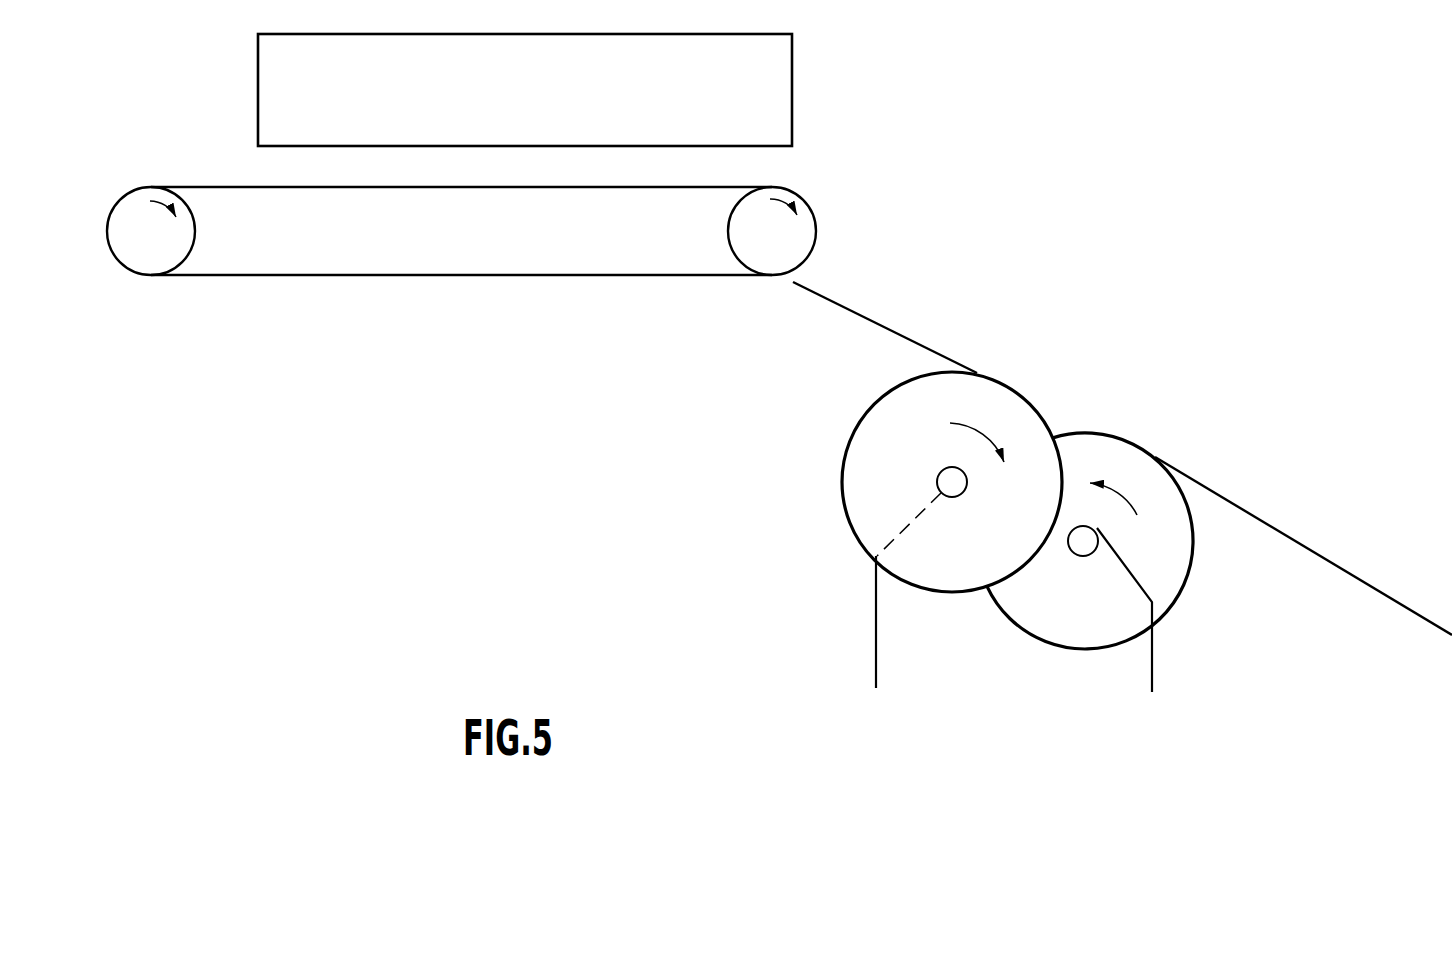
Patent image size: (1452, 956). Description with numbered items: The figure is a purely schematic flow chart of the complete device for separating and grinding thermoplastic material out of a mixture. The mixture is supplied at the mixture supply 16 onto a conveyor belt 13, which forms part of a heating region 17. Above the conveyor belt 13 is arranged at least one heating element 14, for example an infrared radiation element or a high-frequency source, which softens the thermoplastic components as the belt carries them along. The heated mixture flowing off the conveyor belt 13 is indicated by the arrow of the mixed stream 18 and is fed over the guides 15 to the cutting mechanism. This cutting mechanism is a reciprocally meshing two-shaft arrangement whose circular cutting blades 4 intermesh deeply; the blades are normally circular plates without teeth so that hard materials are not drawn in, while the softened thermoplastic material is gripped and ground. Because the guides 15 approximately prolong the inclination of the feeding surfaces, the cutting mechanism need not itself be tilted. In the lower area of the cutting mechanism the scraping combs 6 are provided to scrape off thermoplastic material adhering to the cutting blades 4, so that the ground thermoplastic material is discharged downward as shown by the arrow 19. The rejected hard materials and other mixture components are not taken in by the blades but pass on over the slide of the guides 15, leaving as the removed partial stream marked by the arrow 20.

The circular cutting blades 4 is at (1177, 545).
The scraping combs 6 is at (876, 670).
The conveyor belt 13 is at (547, 257).
The heating element 14 is at (780, 97).
The guides 15 is at (895, 332).
The mixture supply 16 is at (120, 77).
The heating region 17 is at (453, 166).
The mixed stream 18 is at (847, 253).
The discharge of ground thermoplastic material 19 is at (977, 622).
The discharge of other mixture components 20 is at (1245, 463).